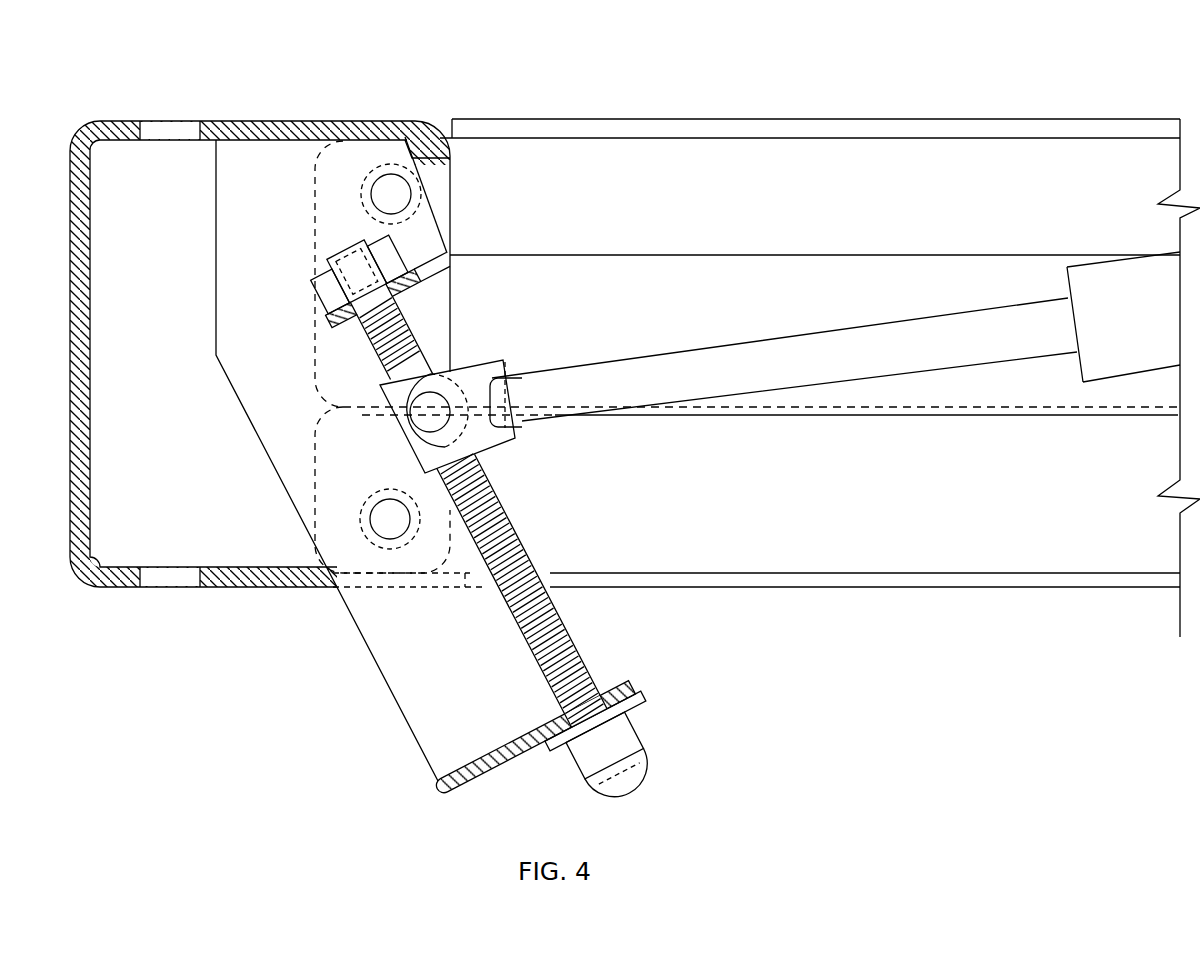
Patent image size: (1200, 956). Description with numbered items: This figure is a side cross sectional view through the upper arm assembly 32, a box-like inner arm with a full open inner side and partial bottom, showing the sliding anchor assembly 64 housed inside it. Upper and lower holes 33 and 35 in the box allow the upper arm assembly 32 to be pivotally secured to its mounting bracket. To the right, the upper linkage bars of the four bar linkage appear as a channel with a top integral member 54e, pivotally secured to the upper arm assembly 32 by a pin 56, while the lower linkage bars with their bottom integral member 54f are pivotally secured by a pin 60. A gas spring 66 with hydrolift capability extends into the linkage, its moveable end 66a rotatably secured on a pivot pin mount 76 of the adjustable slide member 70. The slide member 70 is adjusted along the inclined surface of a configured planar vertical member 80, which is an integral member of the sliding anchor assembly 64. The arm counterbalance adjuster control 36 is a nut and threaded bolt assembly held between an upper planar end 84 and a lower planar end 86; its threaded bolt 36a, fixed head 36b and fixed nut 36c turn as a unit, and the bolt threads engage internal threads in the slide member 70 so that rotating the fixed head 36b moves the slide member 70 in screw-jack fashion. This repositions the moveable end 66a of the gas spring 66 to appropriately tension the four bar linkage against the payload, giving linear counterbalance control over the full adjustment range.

The upper arm assembly 32 is at (260, 317).
The upper hole 33 is at (168, 130).
The lower hole 35 is at (180, 586).
The top integral member 54e is at (655, 132).
The bottom integral member 54f is at (843, 583).
The pin 56 is at (396, 192).
The pin 60 is at (388, 527).
The sliding anchor assembly 64 is at (421, 480).
The gas spring 66 is at (1136, 335).
The moveable end 66a is at (473, 372).
The adjustable slide member 70 is at (453, 380).
The pivot pin mount 76 is at (442, 430).
The vertical member 80 is at (466, 670).
The upper planar end 84 is at (389, 290).
The lower planar end 86 is at (503, 762).
The arm counterbalance adjuster control 36 is at (516, 514).
The threaded bolt 36a is at (482, 511).
The fixed head 36b is at (612, 753).
The fixed nut 36c is at (357, 271).